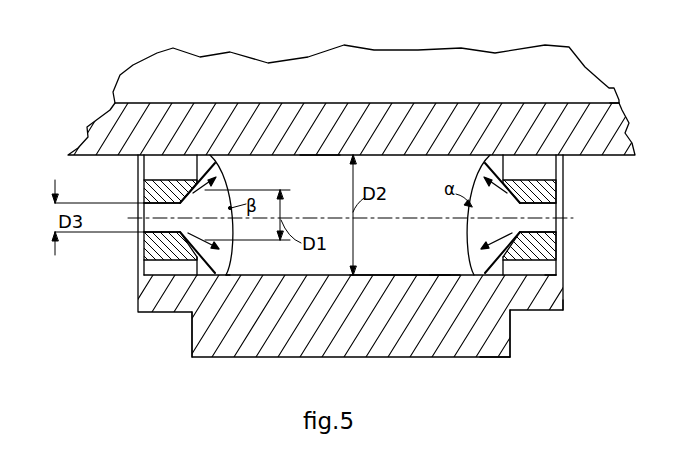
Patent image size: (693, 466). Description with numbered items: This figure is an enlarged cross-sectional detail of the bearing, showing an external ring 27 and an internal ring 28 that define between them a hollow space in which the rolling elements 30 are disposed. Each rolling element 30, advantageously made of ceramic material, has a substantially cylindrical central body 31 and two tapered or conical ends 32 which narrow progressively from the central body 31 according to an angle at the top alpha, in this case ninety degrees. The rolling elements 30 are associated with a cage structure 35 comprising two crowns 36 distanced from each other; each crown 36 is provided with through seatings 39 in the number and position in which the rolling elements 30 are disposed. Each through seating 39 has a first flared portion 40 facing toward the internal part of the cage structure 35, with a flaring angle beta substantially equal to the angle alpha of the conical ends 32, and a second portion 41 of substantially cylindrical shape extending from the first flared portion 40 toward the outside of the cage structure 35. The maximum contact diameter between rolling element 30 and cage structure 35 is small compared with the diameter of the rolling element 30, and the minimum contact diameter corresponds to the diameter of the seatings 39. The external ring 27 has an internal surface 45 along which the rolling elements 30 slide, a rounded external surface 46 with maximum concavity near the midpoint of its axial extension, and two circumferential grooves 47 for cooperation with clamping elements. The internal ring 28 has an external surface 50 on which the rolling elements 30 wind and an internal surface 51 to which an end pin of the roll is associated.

The external ring 27 is at (267, 343).
The internal ring 28 is at (106, 125).
The rolling element 30 is at (446, 282).
The central body 31 is at (377, 260).
The conical end 32 is at (232, 278).
The cage structure 35 is at (133, 189).
The crown 36 is at (172, 250).
The through seating 39 is at (149, 213).
The first flared portion 40 is at (506, 195).
The second portion 41 is at (163, 230).
The internal surface 45 is at (552, 273).
The external surface 46 is at (493, 356).
The groove 47 is at (192, 337).
The external surface 50 is at (327, 158).
The internal surface 51 is at (617, 103).